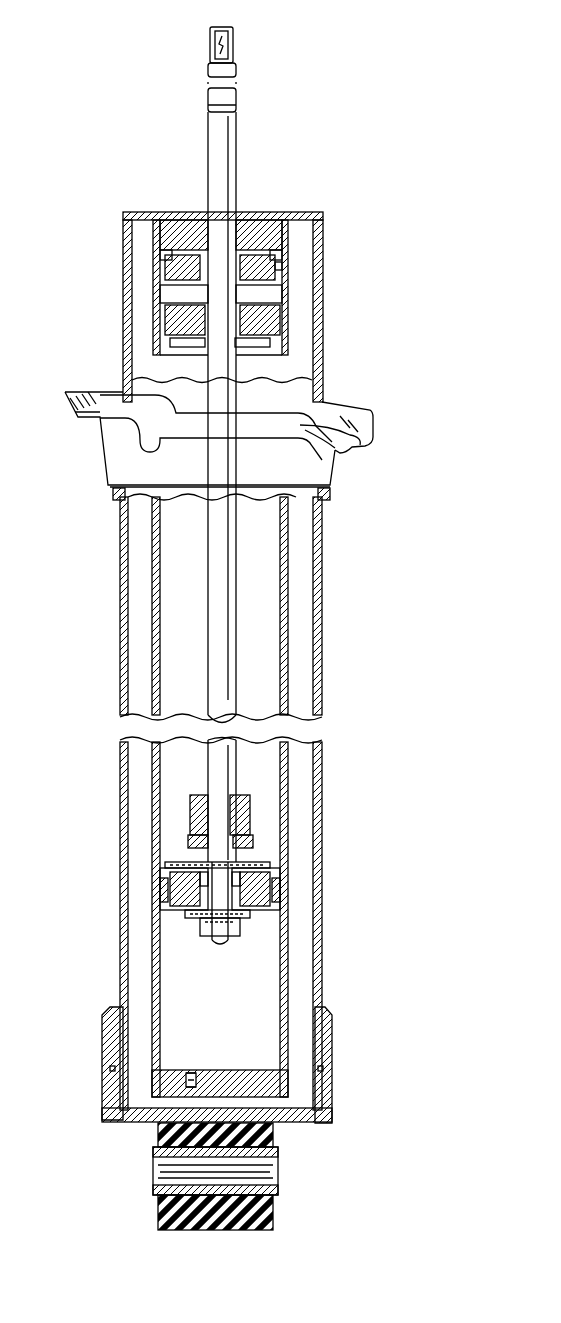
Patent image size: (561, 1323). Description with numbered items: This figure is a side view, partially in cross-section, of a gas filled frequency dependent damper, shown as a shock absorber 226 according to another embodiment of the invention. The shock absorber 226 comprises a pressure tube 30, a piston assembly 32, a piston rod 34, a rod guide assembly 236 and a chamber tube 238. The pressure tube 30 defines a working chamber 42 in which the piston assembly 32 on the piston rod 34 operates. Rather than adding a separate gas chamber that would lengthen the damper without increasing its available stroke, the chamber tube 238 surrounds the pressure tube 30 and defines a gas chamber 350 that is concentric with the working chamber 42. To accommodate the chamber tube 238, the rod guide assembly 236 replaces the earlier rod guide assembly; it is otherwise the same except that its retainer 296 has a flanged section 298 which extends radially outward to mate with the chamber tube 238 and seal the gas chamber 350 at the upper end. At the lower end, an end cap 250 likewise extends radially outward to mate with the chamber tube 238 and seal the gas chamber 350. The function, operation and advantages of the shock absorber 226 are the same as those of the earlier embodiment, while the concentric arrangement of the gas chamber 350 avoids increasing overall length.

The shock absorber 226 is at (326, 86).
The piston rod 34 is at (222, 130).
The flanged section 298 is at (143, 210).
The retainer 296 is at (276, 218).
The rod guide assembly 236 is at (290, 262).
The pressure tube 30 is at (290, 551).
The working chamber 42 is at (186, 639).
The chamber tube 238 is at (323, 779).
The gas chamber 350 is at (140, 841).
The piston assembly 32 is at (275, 886).
The end cap 250 is at (326, 1056).